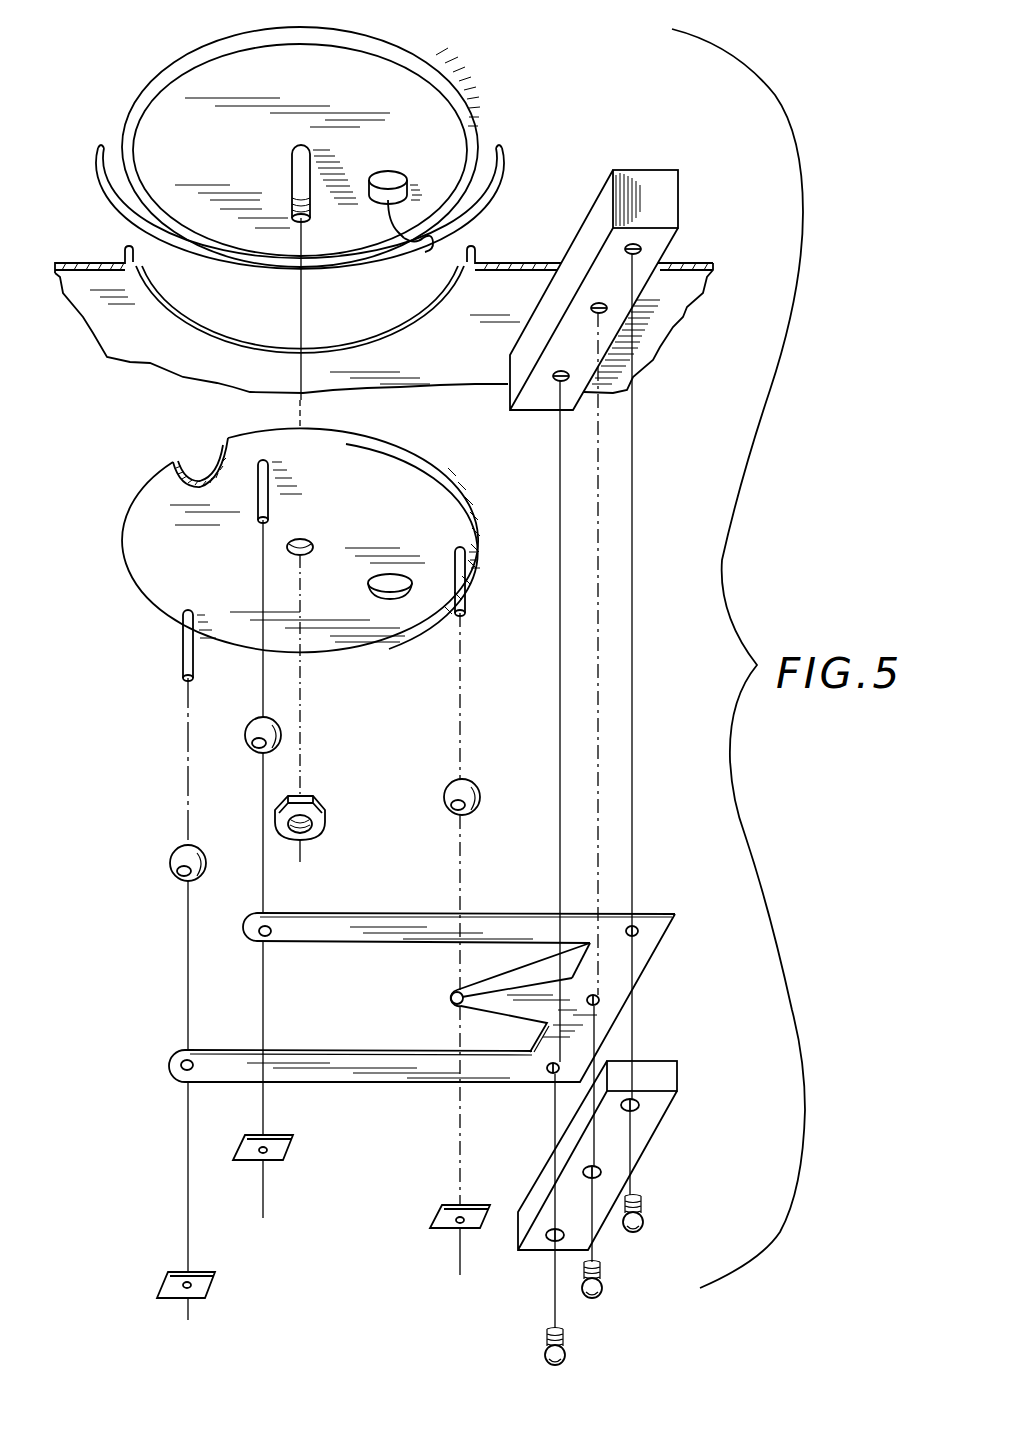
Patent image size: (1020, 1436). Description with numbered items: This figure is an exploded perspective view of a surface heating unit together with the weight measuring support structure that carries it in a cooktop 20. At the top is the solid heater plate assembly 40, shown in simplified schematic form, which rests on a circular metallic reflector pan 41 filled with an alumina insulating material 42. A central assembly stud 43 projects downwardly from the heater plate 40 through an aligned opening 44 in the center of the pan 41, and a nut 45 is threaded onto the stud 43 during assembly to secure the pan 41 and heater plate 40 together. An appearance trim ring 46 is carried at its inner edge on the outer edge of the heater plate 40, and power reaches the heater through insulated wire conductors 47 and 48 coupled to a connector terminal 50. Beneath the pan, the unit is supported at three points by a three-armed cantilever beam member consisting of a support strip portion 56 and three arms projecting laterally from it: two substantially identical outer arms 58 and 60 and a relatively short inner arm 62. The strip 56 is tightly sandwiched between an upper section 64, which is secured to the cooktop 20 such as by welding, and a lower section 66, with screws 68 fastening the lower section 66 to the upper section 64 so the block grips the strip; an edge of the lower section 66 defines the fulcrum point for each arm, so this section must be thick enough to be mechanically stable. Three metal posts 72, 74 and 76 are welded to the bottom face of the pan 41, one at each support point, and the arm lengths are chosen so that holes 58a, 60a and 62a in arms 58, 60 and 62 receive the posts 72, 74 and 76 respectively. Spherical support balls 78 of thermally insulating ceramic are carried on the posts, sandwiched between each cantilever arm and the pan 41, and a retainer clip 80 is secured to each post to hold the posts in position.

The cooktop 20 is at (497, 267).
The solid heater plate assembly 40 is at (420, 66).
The circular metallic pan 41 is at (393, 452).
The alumina insulating material 42 is at (200, 453).
The central assembly stud 43 is at (292, 168).
The aligned opening 44 is at (314, 552).
The nut 45 is at (327, 810).
The appearance trim ring 46 is at (500, 140).
The insulated wire conductor 47 is at (412, 236).
The insulated wire conductor 48 is at (433, 240).
The connector terminal 50 is at (388, 180).
The support strip portion 56 is at (647, 950).
The outer cantilever support arm 58 is at (230, 1070).
The hole 58a is at (172, 1068).
The outer cantilever support arm 60 is at (313, 925).
The hole 60a is at (250, 940).
The inner arm 62 is at (480, 1000).
The hole 62a is at (450, 1000).
The upper section 64 is at (670, 192).
The lower section 66 is at (670, 1078).
The screws 68 is at (566, 1355).
The metal post 72 is at (183, 648).
The metal post 74 is at (270, 517).
The metal post 76 is at (467, 602).
The spherical support balls 78 is at (195, 847).
The retainer clip 80 is at (218, 1278).